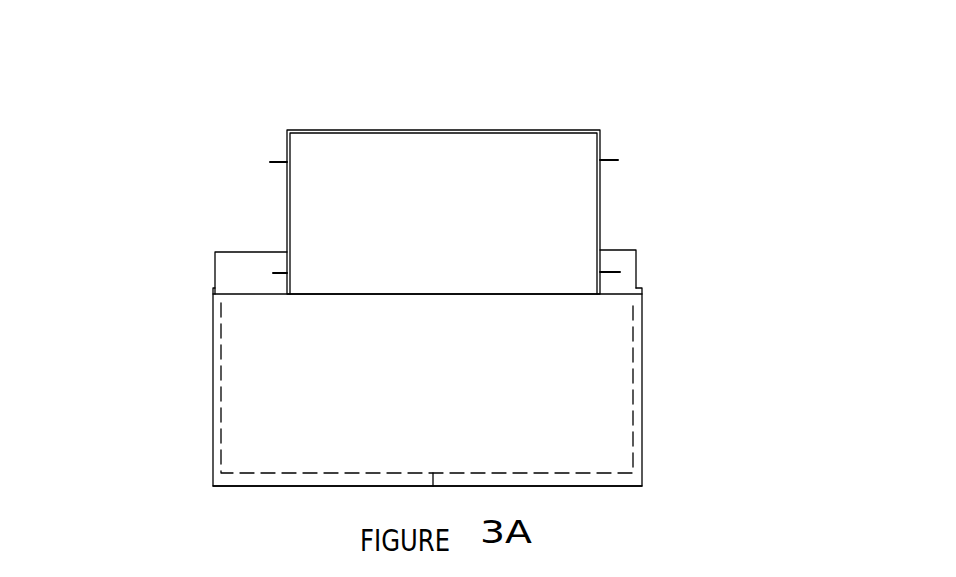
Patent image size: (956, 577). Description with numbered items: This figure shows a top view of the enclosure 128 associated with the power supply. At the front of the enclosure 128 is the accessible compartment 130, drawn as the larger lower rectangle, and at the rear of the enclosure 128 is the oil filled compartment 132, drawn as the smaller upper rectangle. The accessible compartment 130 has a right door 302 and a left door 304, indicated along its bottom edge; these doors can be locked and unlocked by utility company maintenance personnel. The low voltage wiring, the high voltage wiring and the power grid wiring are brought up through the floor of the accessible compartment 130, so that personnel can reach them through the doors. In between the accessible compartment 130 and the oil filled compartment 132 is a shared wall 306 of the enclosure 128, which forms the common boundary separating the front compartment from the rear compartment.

The enclosure 128 is at (212, 128).
The oil filled compartment 132 is at (586, 200).
The accessible compartment 130 is at (615, 373).
The shared wall 306 is at (528, 294).
The left door 304 is at (317, 490).
The right door 302 is at (512, 488).